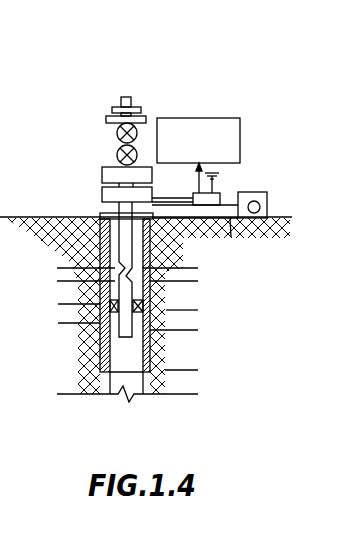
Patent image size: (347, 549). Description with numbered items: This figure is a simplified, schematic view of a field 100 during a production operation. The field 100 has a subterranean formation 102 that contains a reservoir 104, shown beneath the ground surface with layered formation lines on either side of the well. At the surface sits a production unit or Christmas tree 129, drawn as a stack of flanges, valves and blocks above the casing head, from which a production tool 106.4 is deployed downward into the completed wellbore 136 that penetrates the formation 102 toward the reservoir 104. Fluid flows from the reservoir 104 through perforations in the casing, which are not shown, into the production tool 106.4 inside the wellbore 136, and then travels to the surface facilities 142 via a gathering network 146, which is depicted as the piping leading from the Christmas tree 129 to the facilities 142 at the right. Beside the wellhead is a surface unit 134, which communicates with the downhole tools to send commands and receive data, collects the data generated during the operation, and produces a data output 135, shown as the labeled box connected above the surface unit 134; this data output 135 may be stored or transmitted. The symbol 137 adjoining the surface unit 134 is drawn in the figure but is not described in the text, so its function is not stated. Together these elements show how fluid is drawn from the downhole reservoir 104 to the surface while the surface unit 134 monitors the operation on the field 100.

The field 100 is at (62, 148).
The subterranean formation 102 is at (180, 301).
The reservoir 104 is at (206, 355).
The production tool 106.4 is at (108, 332).
The Christmas tree 129 is at (127, 97).
The surface unit 134 is at (194, 194).
The data output 135 is at (223, 118).
The wellbore 136 is at (140, 246).
The ground connection 137 is at (216, 185).
The surface facilities 142 is at (268, 200).
The gathering network 146 is at (231, 237).